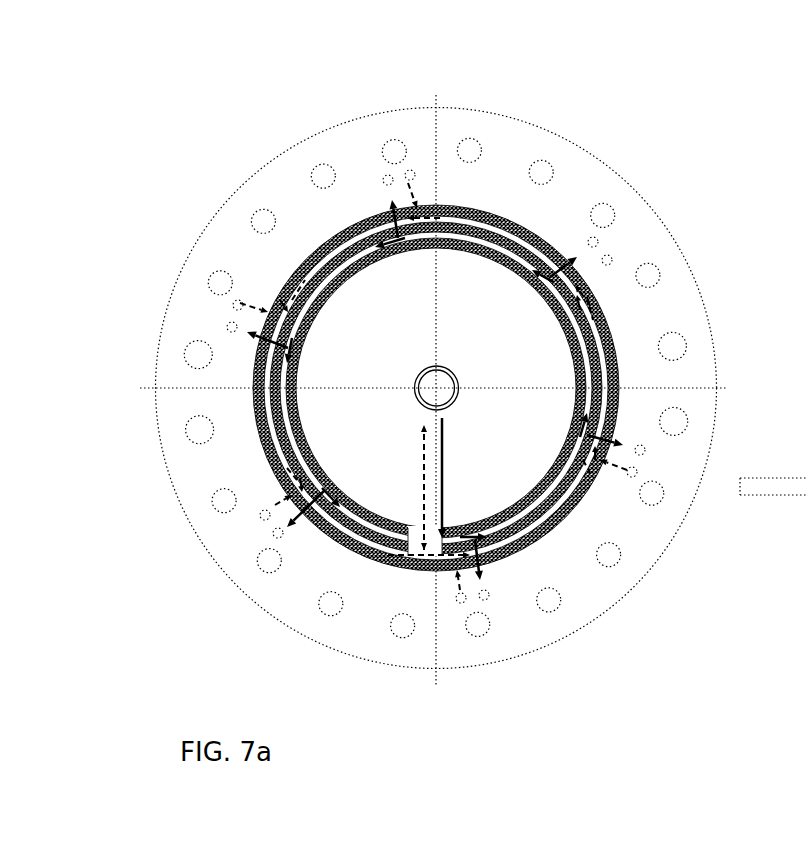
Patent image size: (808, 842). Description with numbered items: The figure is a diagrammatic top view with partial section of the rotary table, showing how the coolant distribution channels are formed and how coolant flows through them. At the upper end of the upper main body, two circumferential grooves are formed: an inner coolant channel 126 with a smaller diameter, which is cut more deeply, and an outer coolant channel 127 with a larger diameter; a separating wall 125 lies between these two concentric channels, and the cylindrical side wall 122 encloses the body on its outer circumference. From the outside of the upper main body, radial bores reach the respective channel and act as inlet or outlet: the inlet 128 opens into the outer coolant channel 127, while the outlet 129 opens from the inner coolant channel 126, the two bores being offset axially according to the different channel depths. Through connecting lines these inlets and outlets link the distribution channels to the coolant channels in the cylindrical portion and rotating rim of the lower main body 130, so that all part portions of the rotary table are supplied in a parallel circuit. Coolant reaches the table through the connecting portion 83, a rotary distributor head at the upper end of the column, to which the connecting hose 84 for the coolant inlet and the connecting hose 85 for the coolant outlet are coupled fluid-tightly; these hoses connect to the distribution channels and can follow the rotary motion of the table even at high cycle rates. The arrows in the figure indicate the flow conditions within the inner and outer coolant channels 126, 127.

The connecting portion 83 is at (415, 398).
The connecting hose 84 is at (423, 437).
The connecting hose 85 is at (442, 458).
The side wall 122 is at (583, 498).
The separating wall 125 is at (604, 366).
The inner coolant channel 126 is at (578, 340).
The outer coolant channel 127 is at (594, 364).
The inlet 128 is at (587, 275).
The outlet 129 is at (580, 253).
The lower main body 130 is at (510, 157).